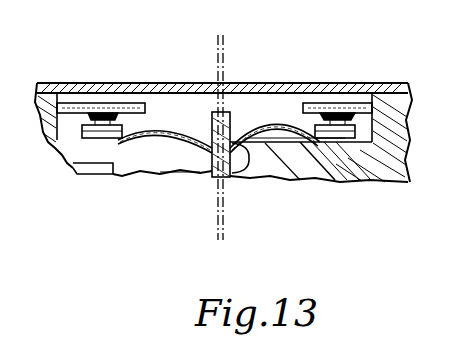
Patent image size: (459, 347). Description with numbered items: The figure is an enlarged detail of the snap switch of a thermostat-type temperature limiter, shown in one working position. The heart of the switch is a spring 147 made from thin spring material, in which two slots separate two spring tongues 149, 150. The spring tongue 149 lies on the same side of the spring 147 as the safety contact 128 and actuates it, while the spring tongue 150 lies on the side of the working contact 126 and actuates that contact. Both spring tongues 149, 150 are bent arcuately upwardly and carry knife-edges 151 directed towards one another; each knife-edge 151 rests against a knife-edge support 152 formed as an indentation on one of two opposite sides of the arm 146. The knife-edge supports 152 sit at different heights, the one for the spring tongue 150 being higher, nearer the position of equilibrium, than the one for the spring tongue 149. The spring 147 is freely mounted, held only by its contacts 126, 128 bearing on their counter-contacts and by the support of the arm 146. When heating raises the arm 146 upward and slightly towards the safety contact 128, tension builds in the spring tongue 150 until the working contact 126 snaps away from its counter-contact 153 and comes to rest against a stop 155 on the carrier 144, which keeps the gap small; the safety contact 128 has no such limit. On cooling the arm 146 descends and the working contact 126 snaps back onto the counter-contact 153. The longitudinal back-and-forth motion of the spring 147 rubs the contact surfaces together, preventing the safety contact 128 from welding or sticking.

The working contact 126 is at (345, 112).
The safety contact 128 is at (102, 115).
The carrier 144 is at (390, 150).
The arm 146 is at (236, 125).
The spring 147 is at (156, 118).
The spring tongue 149 is at (158, 138).
The spring tongue 150 is at (294, 180).
The knife-edge 151 is at (203, 175).
The knife-edge support 152 is at (238, 178).
The counter-contact 153 is at (312, 104).
The stop 155 is at (348, 178).